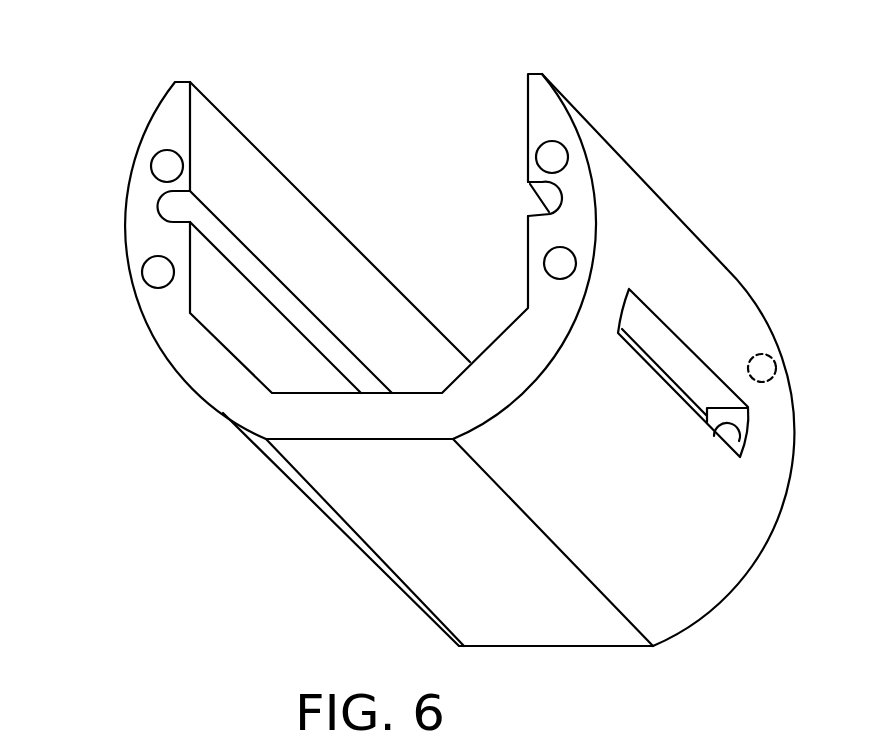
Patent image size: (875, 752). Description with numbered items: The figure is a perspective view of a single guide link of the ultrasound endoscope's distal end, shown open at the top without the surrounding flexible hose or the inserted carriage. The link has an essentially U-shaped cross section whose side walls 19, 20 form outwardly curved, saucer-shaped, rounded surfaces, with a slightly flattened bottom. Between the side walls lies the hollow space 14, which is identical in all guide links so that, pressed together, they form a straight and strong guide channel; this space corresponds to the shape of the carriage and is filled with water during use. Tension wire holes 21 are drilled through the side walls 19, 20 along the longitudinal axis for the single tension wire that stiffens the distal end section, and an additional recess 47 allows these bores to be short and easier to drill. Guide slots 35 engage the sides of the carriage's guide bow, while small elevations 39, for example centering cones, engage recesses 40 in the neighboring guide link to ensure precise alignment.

The hollow space 14 is at (462, 135).
The side wall 19 is at (228, 121).
The opposite side wall 20 is at (643, 196).
The tension wire holes 21 is at (158, 277).
The guide slots 35 is at (214, 228).
The elevations 39 is at (172, 162).
The recesses 40 is at (756, 356).
The additional recess 47 is at (680, 357).